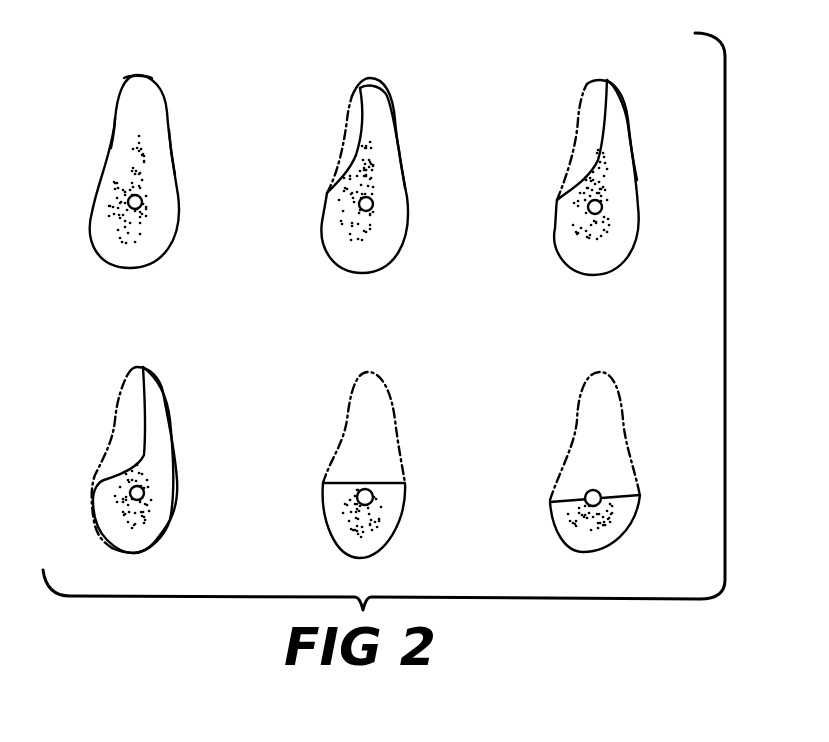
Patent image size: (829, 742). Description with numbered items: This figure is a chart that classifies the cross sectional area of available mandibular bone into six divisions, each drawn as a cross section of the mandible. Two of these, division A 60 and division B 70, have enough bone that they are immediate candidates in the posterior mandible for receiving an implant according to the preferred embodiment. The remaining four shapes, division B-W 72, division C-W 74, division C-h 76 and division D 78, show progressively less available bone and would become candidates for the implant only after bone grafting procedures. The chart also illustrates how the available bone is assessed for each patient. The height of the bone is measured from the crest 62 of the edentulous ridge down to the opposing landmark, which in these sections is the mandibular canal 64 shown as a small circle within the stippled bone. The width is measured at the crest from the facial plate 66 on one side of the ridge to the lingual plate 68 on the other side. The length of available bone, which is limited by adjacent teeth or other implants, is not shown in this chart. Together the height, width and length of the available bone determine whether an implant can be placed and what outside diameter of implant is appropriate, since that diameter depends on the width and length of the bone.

The division A 60 is at (118, 72).
The crest 62 is at (147, 73).
The mandibular canal 64 is at (140, 205).
The facial plate 66 is at (113, 131).
The lingual plate 68 is at (172, 165).
The division B 70 is at (351, 73).
The division B-W 72 is at (574, 80).
The division C-W 74 is at (111, 376).
The division C-h 76 is at (342, 380).
The division D 78 is at (574, 385).